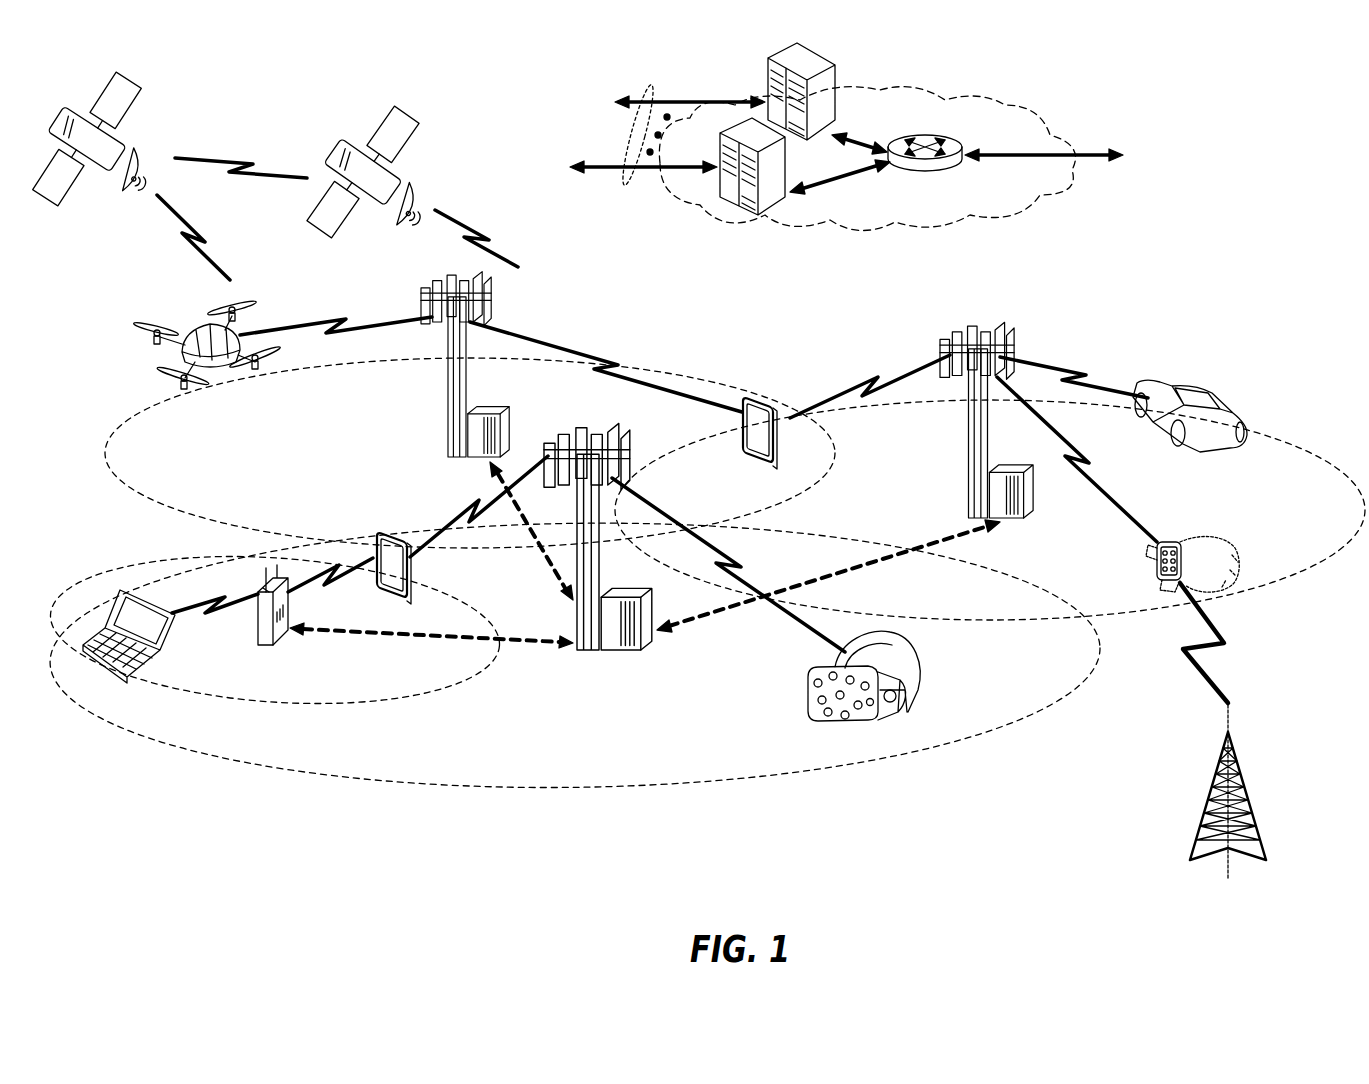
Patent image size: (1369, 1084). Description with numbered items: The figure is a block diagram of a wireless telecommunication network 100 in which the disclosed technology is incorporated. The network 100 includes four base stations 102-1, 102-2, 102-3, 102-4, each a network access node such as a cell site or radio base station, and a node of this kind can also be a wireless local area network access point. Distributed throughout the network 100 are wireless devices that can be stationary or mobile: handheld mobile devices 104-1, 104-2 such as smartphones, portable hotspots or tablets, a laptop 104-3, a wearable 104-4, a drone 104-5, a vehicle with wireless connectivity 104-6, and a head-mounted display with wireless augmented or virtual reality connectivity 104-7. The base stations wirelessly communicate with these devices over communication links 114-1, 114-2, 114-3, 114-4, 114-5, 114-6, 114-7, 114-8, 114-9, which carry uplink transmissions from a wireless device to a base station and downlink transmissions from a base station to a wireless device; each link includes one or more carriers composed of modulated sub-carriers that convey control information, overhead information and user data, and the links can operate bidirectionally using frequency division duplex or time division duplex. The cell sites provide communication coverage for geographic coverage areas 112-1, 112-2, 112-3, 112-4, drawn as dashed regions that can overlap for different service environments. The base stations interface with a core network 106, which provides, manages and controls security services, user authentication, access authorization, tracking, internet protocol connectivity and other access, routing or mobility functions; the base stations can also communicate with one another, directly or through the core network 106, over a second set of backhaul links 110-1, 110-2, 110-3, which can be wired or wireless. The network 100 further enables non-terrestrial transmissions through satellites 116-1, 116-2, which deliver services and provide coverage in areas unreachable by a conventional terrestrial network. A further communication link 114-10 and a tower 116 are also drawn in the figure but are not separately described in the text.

The wireless telecommunication network 100 is at (1266, 142).
The base station 102-1 is at (585, 655).
The base station 102-2 is at (455, 402).
The base station 102-3 is at (968, 440).
The base station 102-4 is at (255, 645).
The handheld mobile device 104-1 is at (455, 574).
The handheld mobile device 104-2 is at (735, 440).
The laptop 104-3 is at (103, 675).
The wearable 104-4 is at (1172, 541).
The drone 104-5 is at (230, 378).
The vehicle with wireless connectivity 104-6 is at (1210, 388).
The head-mounted display 104-7 is at (920, 670).
The core network 106 is at (960, 225).
The backhaul link 110-1 is at (330, 634).
The backhaul link 110-2 is at (888, 563).
The backhaul link 110-3 is at (540, 570).
The geographic coverage area 112-1 is at (510, 780).
The geographic coverage area 112-2 is at (390, 690).
The geographic coverage area 112-3 is at (150, 505).
The geographic coverage area 112-4 is at (1265, 438).
The communication link 114-1 is at (745, 567).
The communication link 114-2 is at (475, 508).
The communication link 114-3 is at (183, 612).
The communication link 114-4 is at (330, 580).
The communication link 114-5 is at (333, 322).
The communication link 114-6 is at (862, 383).
The communication link 114-7 is at (622, 360).
The communication link 114-8 is at (1095, 462).
The communication link 114-9 is at (1065, 378).
The wireless communication link 114-10 is at (1215, 650).
The broadcast tower 116 is at (1246, 762).
The satellite 116-1 is at (142, 150).
The satellite 116-2 is at (420, 185).